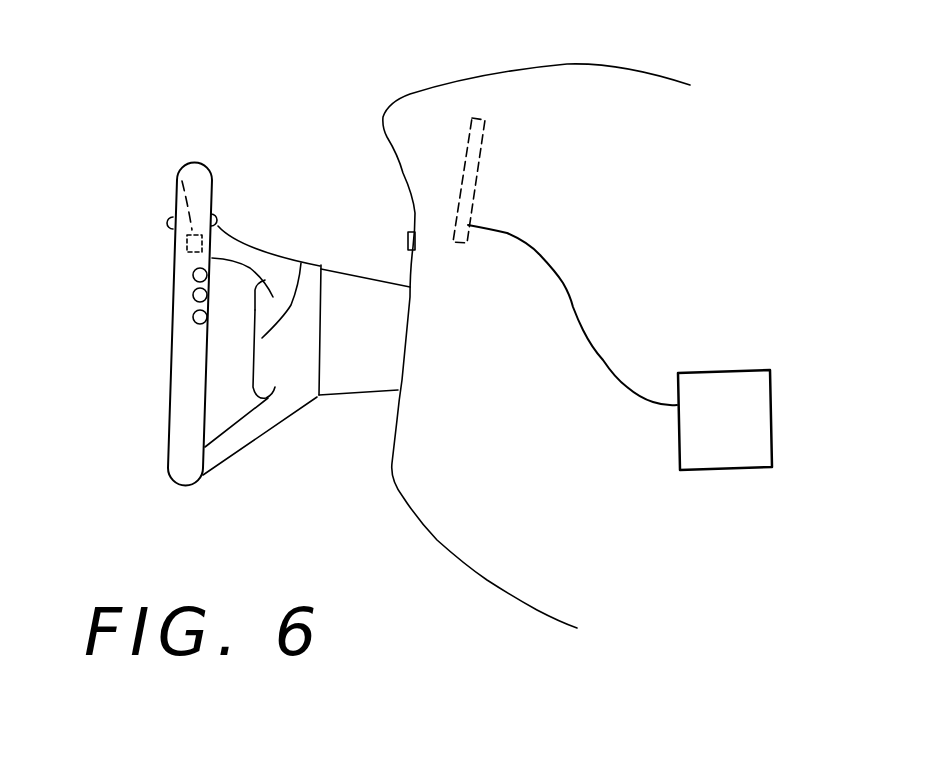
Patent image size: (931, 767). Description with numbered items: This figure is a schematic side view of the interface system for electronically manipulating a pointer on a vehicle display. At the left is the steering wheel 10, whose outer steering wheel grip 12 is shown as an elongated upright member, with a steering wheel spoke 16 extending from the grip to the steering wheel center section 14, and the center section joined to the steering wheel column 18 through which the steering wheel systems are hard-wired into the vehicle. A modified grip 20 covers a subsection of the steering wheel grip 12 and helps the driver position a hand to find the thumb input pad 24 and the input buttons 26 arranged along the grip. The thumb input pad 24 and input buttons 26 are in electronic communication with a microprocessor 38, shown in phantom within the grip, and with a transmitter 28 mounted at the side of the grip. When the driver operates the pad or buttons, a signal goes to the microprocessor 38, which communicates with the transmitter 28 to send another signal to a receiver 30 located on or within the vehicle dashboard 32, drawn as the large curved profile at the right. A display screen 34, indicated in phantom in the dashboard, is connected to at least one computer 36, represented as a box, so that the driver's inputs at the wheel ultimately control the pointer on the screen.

The steering wheel 10 is at (104, 408).
The steering wheel grip 12 is at (185, 442).
The steering wheel center section 14 is at (301, 263).
The steering wheel spoke 16 is at (232, 438).
The steering wheel column 18 is at (372, 370).
The modified grip 20 is at (172, 247).
The thumb input pad 24 is at (163, 221).
The input buttons 26 is at (193, 275).
The transmitter 28 is at (220, 225).
The receiver 30 is at (407, 240).
The vehicle dashboard 32 is at (443, 93).
The display screen 34 is at (480, 143).
The computer 36 is at (740, 426).
The microprocessor 38 is at (178, 175).